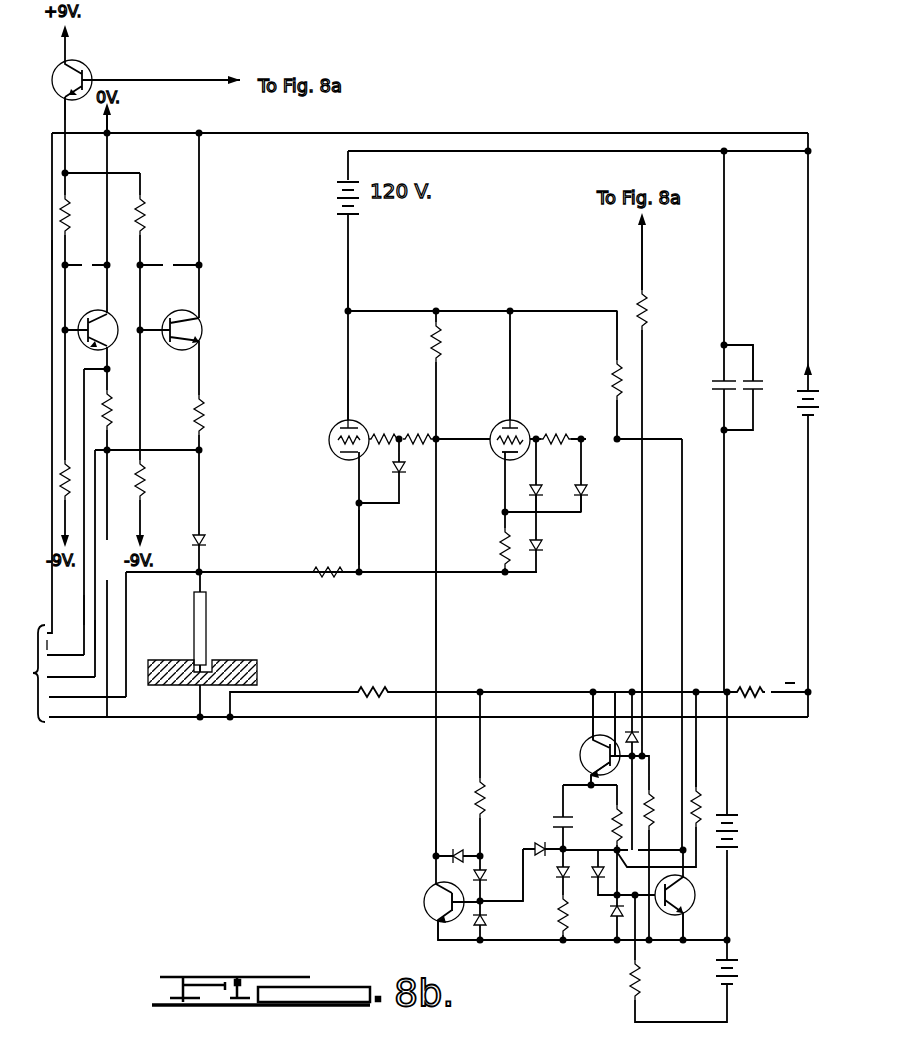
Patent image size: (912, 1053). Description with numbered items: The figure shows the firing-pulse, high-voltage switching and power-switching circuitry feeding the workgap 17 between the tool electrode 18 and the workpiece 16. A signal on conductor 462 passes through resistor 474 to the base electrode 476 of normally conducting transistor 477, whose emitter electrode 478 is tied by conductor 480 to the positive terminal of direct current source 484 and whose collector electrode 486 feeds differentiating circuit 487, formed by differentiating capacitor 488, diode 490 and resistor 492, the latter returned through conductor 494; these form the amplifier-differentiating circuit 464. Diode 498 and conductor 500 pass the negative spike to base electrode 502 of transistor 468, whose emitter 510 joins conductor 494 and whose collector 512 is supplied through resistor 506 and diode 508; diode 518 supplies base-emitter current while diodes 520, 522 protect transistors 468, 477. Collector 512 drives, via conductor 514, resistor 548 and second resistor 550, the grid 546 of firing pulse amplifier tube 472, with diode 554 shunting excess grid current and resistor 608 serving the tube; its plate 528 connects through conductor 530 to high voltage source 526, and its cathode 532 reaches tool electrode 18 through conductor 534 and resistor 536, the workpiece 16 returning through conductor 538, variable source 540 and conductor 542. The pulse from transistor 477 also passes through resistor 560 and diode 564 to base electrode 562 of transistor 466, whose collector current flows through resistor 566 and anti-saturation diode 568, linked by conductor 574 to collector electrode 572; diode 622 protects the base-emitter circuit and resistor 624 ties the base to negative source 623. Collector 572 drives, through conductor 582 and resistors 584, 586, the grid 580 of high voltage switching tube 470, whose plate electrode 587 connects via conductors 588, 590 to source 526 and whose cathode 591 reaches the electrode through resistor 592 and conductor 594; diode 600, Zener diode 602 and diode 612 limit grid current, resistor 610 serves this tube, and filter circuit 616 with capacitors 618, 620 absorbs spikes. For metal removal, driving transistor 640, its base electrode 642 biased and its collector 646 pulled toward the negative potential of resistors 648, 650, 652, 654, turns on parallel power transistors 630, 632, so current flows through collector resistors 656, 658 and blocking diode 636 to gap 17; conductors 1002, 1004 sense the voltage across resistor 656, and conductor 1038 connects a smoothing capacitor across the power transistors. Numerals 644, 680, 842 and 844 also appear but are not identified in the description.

The transistor 644 is at (78, 62).
The main driving transistor 640 is at (90, 80).
The output line to Fig. 8a 680 is at (220, 80).
The base electrode 642 is at (135, 109).
The collector 646 is at (64, 100).
The resistor 648 is at (68, 214).
The resistor 652 is at (143, 212).
The conductor 1038 is at (52, 248).
The high power, low voltage transistor 632 is at (112, 318).
The high power, low voltage transistor 630 is at (200, 318).
The collector resistor 656 is at (112, 402).
The collector resistor 658 is at (205, 405).
The resistor 654 is at (144, 475).
The blocking diode 636 is at (206, 540).
The resistor 650 is at (68, 490).
The conductor 1002 is at (85, 608).
The conductor 1004 is at (96, 635).
The tool electrode 18 is at (208, 616).
The workgap 17 is at (206, 660).
The workpiece 16 is at (258, 668).
The cable lines 842 is at (64, 722).
The ground line 844 is at (110, 717).
The conductor 538 is at (295, 718).
The source of high voltage direct current potential 526 is at (337, 205).
The conductor 530 is at (350, 285).
The plate 528 is at (346, 405).
The grid 546 is at (362, 436).
The firing pulse amplifier tube 472 is at (335, 444).
The resistor 548 is at (383, 446).
The cathode 532 is at (327, 524).
The conductor 534 is at (358, 550).
The resistor 536 is at (330, 575).
The resistor 608 is at (440, 350).
The second resistor 550 is at (418, 437).
The high voltage switching tube 470 is at (492, 441).
The cathode 591 is at (502, 452).
The diode 554 is at (402, 468).
The conductor 594 is at (444, 570).
The resistor 592 is at (503, 548).
The conductor 588 is at (513, 347).
The plate electrode 587 is at (512, 425).
The grid 580 is at (532, 438).
The resistor 586 is at (538, 483).
The resistor 584 is at (587, 488).
The diode 600 is at (538, 498).
The diode 612 is at (584, 510).
The Zener diode 602 is at (542, 548).
The resistor 610 is at (616, 362).
The conductor 590 is at (598, 298).
The conductor 462 is at (640, 247).
The resistor 474 is at (646, 302).
The filter circuit 616 is at (717, 379).
The capacitor 618 is at (745, 375).
The capacitor 620 is at (745, 391).
The variable source of potential 540 is at (795, 392).
The conductor 542 is at (585, 150).
The conductor 582 is at (683, 573).
The conductor 514 is at (440, 628).
The conductor 480 is at (660, 692).
The amplifier-differentiating circuit 464 is at (588, 731).
The base electrode 476 is at (608, 710).
The emitter electrode 478 is at (585, 745).
The transistor 477 is at (583, 748).
The collector electrode 486 is at (590, 772).
The resistor 506 is at (484, 800).
The differentiating capacitor 488 is at (560, 823).
The diode 508 is at (458, 854).
The differentiating circuit 487 is at (551, 862).
The diode 490 is at (556, 872).
The conductor 500 is at (500, 903).
The diode 520 is at (488, 925).
The transistor 468 is at (428, 910).
The diode 518 is at (435, 855).
The collector 512 is at (430, 894).
The emitter 510 is at (441, 928).
The base electrode 502 is at (462, 925).
The conductor 494 is at (572, 942).
The resistor 492 is at (566, 915).
The diode 498 is at (546, 848).
The diode 522 is at (636, 740).
The diode 568 is at (652, 790).
The resistor 560 is at (614, 822).
The resistor 566 is at (698, 790).
The conductor 574 is at (670, 835).
The direct current source of potential 484 is at (742, 832).
The diode 564 is at (607, 874).
The collector electrode 572 is at (695, 893).
The transistor 466 is at (692, 905).
The base electrode 562 is at (690, 928).
The diode 622 is at (622, 915).
The resistor 624 is at (640, 980).
The negative source of potential 623 is at (740, 975).